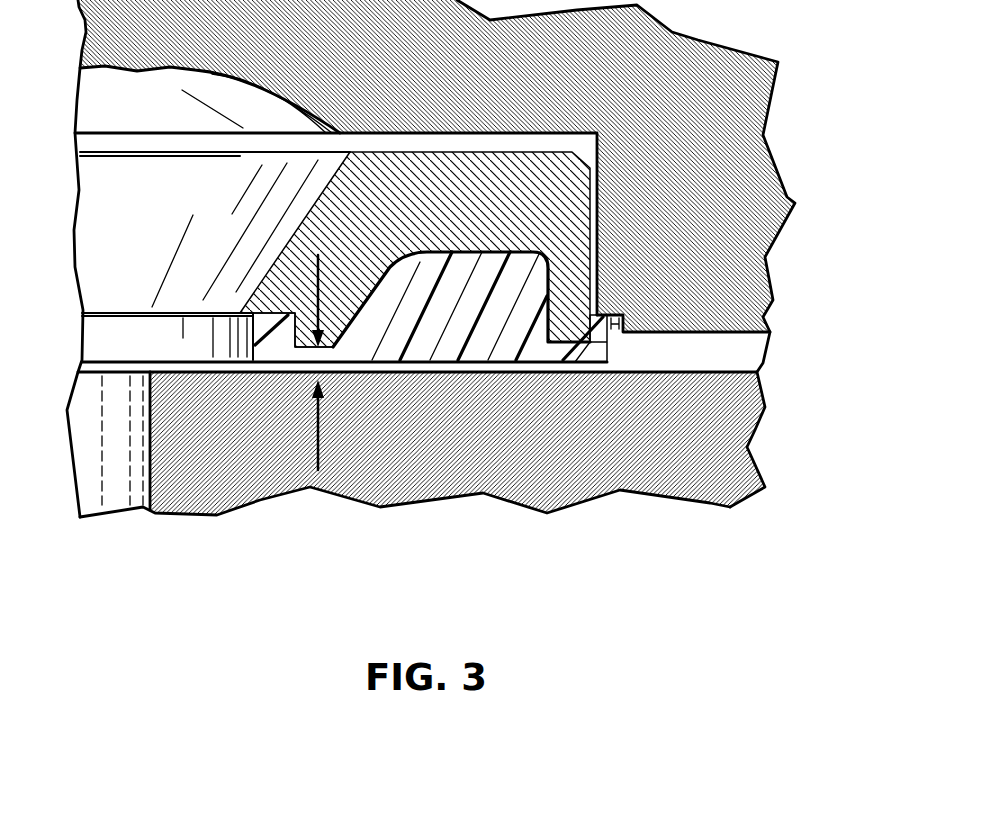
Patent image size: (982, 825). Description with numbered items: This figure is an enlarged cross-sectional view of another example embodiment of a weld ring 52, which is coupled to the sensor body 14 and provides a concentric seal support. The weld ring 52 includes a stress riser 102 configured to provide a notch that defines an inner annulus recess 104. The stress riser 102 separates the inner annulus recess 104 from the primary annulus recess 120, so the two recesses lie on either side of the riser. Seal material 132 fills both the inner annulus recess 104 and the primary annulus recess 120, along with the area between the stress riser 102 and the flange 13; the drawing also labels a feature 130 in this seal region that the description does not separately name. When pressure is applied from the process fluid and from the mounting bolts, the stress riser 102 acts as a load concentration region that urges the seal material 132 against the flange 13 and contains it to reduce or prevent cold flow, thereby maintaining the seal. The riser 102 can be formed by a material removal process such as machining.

The sensor body 14 is at (720, 180).
The flange 13 is at (710, 452).
The weld ring 52 is at (562, 190).
The primary annulus recess 120 is at (245, 195).
The seal bead 130 is at (513, 290).
The seal material 132 is at (480, 307).
The stress riser 102 is at (344, 345).
The inner annulus recess 104 is at (276, 338).